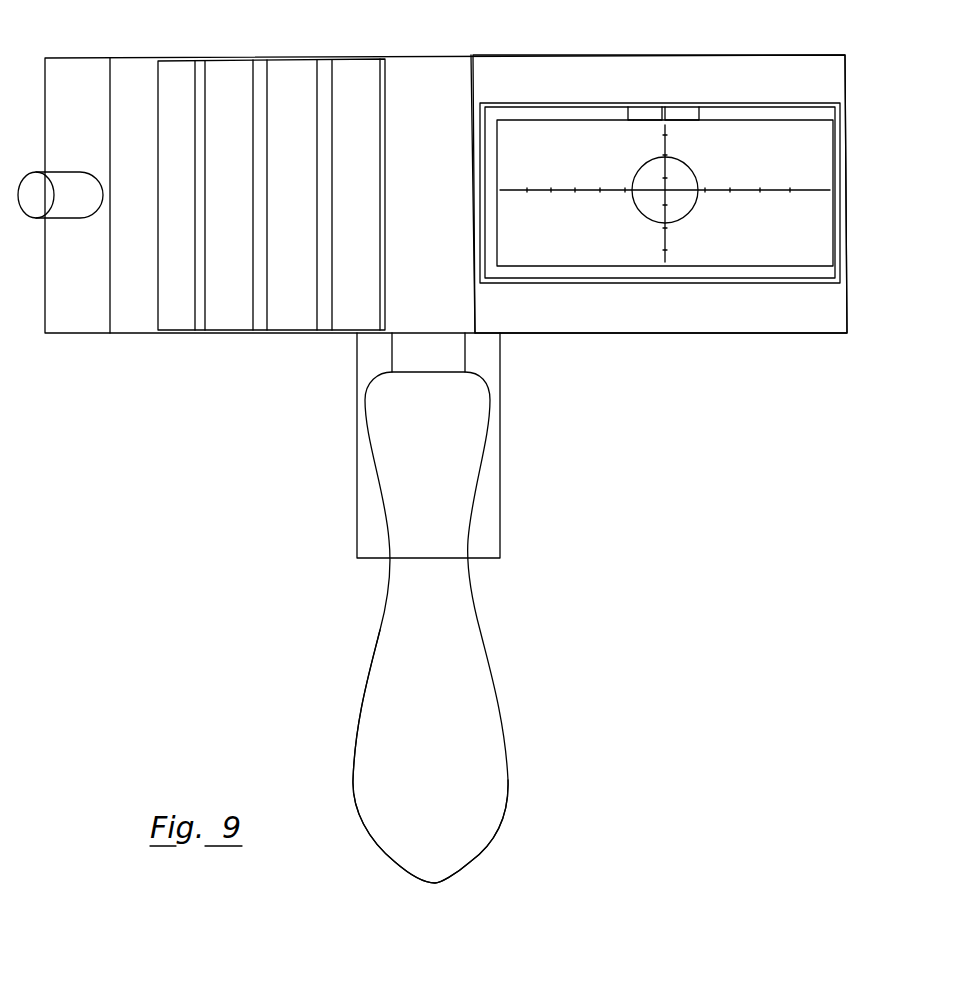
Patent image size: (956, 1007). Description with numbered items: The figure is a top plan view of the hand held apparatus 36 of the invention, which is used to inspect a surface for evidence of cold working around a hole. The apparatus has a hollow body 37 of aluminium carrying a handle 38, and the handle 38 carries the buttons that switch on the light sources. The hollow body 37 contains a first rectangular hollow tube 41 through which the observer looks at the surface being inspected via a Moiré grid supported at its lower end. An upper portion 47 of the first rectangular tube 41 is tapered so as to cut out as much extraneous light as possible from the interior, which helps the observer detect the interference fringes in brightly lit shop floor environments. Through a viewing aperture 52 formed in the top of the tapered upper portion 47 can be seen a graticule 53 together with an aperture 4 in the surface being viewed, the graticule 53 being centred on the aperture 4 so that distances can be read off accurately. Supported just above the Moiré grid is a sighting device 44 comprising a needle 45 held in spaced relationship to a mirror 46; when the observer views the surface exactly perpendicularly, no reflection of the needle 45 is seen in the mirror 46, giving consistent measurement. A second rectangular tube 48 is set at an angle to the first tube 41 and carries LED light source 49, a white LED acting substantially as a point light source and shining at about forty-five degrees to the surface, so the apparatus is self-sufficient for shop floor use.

The aperture 4 is at (683, 218).
The hand held apparatus 36 is at (535, 733).
The hollow body 37 is at (598, 333).
The handle 38 is at (507, 788).
The first rectangular hollow tube 41 is at (775, 333).
The sighting device 44 is at (687, 97).
The needle 45 is at (655, 108).
The mirror 46 is at (695, 103).
The upper portion 47 is at (567, 92).
The second rectangular tube 48 is at (230, 335).
The LED light source 49 is at (70, 180).
The viewing aperture 52 is at (575, 235).
The graticule 53 is at (623, 192).